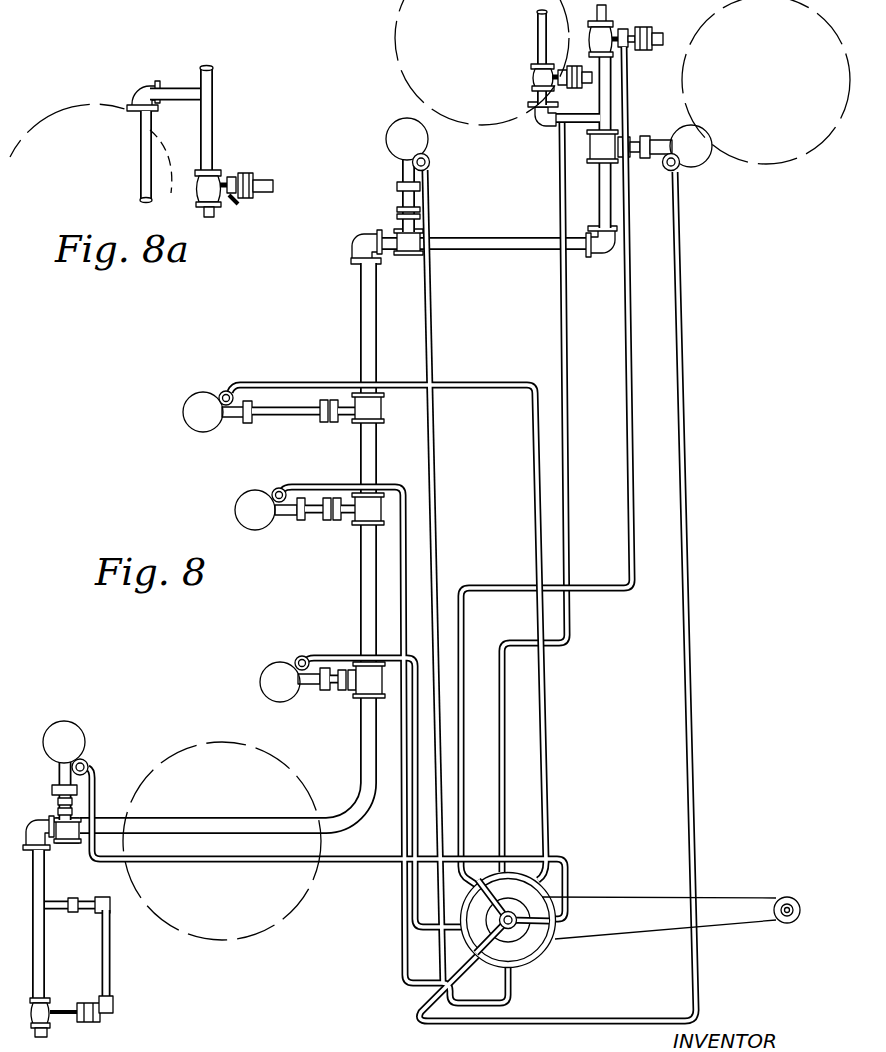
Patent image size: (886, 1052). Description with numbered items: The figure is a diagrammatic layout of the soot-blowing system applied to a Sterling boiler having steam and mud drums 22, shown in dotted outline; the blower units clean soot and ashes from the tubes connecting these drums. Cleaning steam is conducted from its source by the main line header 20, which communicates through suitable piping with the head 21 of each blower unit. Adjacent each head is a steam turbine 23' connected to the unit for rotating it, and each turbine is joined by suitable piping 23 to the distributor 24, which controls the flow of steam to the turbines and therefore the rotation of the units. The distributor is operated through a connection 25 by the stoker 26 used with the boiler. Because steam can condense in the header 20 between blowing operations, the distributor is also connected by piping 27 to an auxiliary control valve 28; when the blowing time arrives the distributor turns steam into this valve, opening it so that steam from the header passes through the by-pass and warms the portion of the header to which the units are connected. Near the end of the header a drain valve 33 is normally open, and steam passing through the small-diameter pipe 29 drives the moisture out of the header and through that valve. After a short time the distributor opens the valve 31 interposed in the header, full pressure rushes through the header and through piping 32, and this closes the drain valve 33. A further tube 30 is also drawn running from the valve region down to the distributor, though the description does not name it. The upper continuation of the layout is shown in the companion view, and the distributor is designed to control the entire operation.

In FIG. 8A, the main line header 20 is at (210, 80).
In FIG. 8, the main line header 20 is at (608, 213).
In FIG. 8, the head of the blower unit 21 is at (420, 143).
In FIG. 8A, the steam and mud drums 22 is at (163, 148).
In FIG. 8, the steam and mud drums 22 is at (378, 110).
In FIG. 8, the piping 23 is at (409, 595).
In FIG. 8, the steam turbine 23' is at (376, 465).
In FIG. 8, the distributor 24 is at (528, 872).
In FIG. 8, the connection 25 is at (636, 898).
In FIG. 8, the stoker 26 is at (788, 897).
In FIG. 8, the piping 27 is at (564, 337).
In FIG. 8, the auxiliary control valve 28 is at (530, 78).
In FIG. 8A, the pipe 29 is at (140, 161).
In FIG. 8, the pipe 29 is at (538, 40).
In FIG. 8, the tube 30 is at (634, 403).
In FIG. 8A, the valve 31 is at (211, 185).
In FIG. 8, the valve 31 is at (606, 37).
In FIG. 8, the piping 32 is at (111, 944).
In FIG. 8, the drain valve 33 is at (42, 1015).